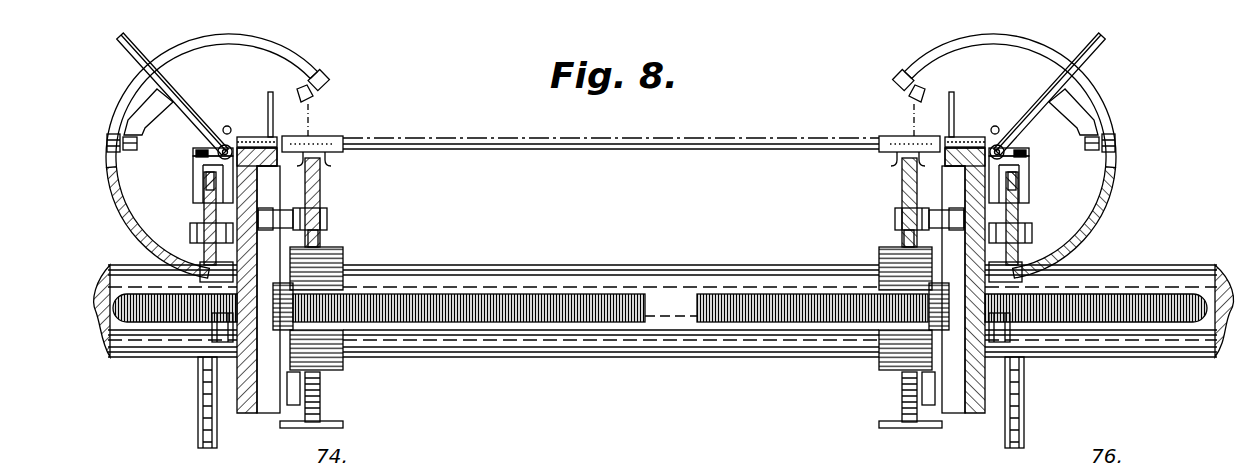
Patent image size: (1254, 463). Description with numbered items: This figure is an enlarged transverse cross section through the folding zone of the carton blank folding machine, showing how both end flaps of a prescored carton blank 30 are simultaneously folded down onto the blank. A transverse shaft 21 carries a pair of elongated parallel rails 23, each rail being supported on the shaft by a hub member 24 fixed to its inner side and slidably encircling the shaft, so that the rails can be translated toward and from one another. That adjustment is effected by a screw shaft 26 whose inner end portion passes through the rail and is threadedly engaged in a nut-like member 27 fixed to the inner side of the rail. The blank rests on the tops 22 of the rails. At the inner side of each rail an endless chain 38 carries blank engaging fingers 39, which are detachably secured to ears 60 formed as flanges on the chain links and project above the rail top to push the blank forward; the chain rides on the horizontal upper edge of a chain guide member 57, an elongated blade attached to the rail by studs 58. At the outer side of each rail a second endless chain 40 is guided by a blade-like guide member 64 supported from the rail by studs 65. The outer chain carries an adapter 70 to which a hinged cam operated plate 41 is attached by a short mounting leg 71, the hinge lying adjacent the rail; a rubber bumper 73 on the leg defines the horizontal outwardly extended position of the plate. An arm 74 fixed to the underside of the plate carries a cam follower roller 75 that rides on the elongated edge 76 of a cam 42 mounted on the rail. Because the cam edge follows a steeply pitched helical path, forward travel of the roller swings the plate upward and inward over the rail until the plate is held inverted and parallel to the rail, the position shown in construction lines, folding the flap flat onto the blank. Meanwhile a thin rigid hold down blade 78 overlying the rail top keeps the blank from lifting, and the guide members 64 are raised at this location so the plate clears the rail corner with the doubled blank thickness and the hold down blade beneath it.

The shaft 21 is at (620, 272).
The top of rail 22 is at (243, 135).
The rail 23 is at (249, 405).
The hub member 24 is at (332, 250).
The screw shaft 26 is at (482, 296).
The nut-like member 27 is at (317, 284).
The carton blank 30 is at (619, 143).
The endless chain 38 is at (322, 400).
The blank engaging finger 39 is at (341, 140).
The endless chain 40 is at (199, 388).
The hinged cam operated plate 41 is at (182, 112).
The cam 42 is at (186, 58).
The chain guide member 57 is at (322, 192).
The stud 58 is at (336, 222).
The ear 60 is at (340, 424).
The guide member 64 is at (204, 205).
The stud 65 is at (196, 230).
The adapter 70 is at (198, 172).
The mounting leg 71 is at (192, 155).
The rubber bumper 73 is at (201, 151).
The arm 74 is at (140, 98).
The cam follower roller 75 is at (108, 143).
The cam edge 76 is at (289, 54).
The hold down blade 78 is at (259, 135).